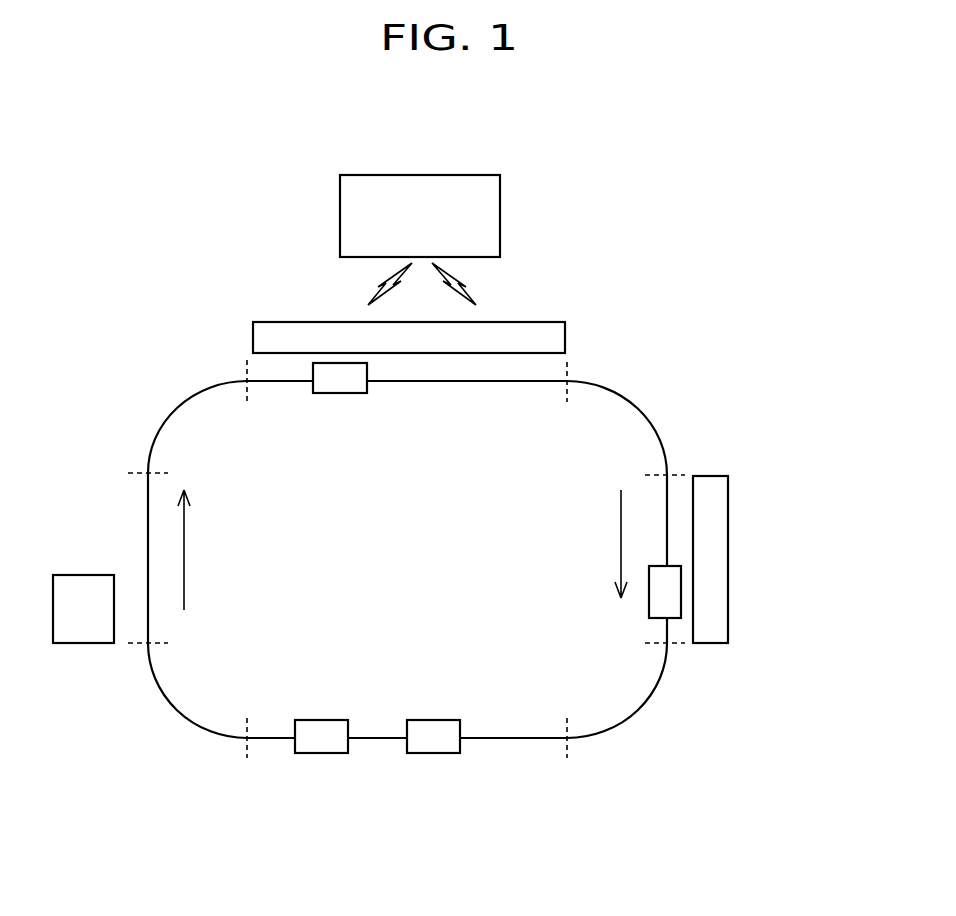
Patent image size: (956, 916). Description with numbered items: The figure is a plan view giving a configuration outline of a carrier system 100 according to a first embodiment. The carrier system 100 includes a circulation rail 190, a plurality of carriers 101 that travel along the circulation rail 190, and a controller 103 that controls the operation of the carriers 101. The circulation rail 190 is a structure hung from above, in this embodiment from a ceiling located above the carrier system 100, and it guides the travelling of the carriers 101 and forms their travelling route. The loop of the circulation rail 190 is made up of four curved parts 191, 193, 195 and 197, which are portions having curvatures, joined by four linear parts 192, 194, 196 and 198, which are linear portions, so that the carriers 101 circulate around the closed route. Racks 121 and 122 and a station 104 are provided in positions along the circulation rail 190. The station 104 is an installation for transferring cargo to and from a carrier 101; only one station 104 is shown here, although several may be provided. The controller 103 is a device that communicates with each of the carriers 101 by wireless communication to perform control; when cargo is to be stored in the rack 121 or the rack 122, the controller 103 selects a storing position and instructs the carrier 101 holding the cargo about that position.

The carrier system 100 is at (632, 238).
The carrier 101 is at (343, 394).
The controller 103 is at (340, 227).
The station 104 is at (78, 575).
The rack 121 is at (565, 335).
The rack 122 is at (729, 505).
The circulation rail 190 is at (439, 581).
The curved part 191 is at (178, 412).
The linear part 192 is at (434, 382).
The curved part 193 is at (646, 416).
The linear part 194 is at (665, 636).
The curved part 195 is at (650, 697).
The linear part 196 is at (500, 740).
The curved part 197 is at (178, 705).
The linear part 198 is at (150, 627).